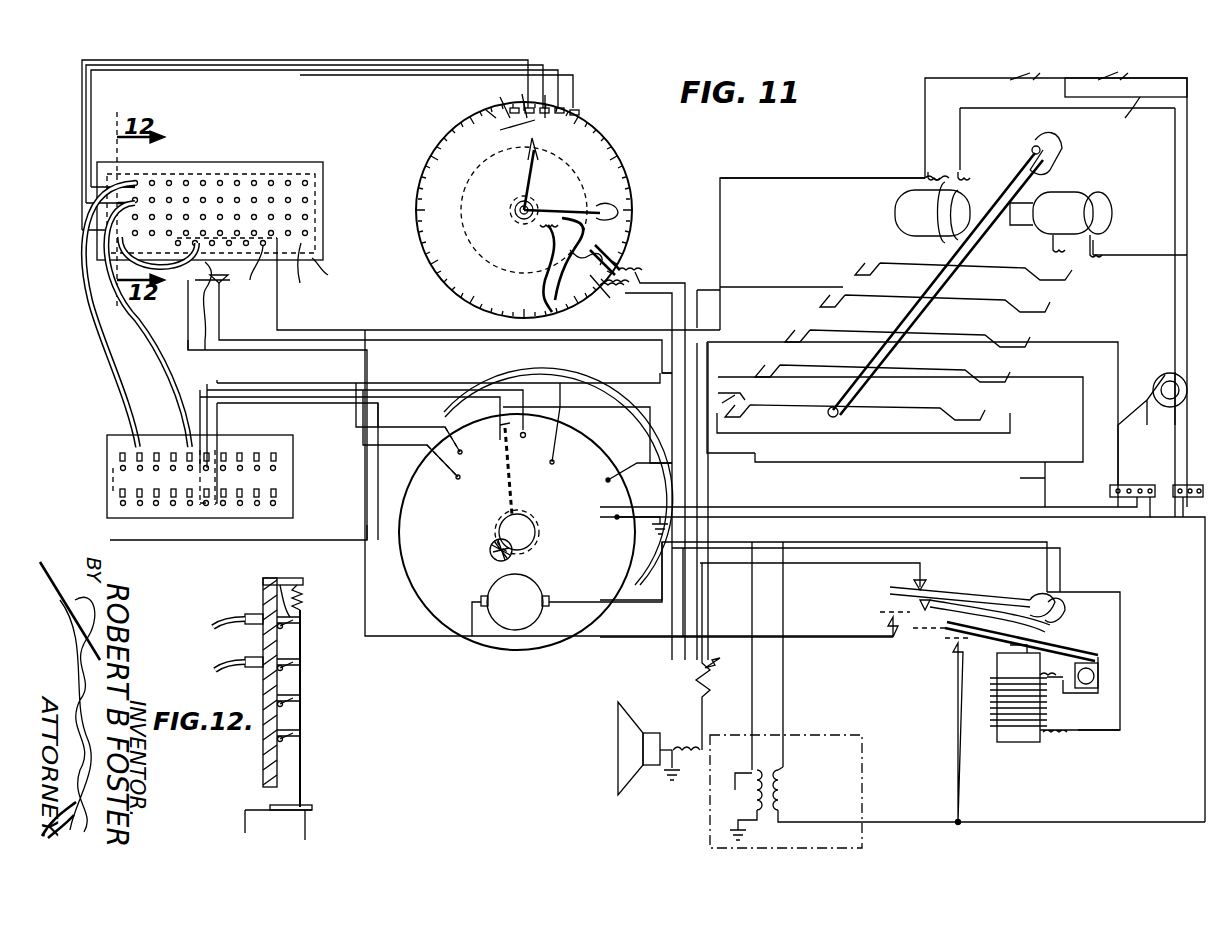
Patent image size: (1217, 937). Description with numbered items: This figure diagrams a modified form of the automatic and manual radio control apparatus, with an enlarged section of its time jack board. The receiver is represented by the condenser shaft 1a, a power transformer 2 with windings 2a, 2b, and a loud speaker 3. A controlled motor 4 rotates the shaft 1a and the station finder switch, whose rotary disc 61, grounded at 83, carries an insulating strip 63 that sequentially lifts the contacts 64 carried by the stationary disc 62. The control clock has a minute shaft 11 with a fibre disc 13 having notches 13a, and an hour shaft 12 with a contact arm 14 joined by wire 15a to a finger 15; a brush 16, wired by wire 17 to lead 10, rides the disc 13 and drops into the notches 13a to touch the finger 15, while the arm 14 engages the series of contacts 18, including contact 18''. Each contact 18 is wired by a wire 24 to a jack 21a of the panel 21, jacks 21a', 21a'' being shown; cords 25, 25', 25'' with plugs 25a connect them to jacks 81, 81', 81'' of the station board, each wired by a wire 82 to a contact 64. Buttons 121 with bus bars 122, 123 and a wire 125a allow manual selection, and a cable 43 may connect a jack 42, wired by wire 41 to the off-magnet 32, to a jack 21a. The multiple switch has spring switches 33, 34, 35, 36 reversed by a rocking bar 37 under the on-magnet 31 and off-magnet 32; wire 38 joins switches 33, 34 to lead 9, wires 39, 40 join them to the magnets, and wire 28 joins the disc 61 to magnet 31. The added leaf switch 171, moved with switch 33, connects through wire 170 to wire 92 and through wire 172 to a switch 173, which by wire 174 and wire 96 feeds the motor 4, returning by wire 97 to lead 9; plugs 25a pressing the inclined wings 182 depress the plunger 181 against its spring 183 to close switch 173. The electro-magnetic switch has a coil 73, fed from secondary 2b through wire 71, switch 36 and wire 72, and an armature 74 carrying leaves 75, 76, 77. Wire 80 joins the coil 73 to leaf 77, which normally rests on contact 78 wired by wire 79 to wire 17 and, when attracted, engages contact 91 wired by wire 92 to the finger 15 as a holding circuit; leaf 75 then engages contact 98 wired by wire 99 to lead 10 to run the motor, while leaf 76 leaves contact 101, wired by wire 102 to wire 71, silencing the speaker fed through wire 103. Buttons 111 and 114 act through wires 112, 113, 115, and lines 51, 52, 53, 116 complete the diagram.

In FIG. 11, the wire 24 is at (82, 128).
In FIG. 11, the board or panel 21 is at (320, 160).
In FIG. 12, the board or panel 21 is at (263, 684).
In FIG. 11, the jacks 21a is at (235, 200).
In FIG. 12, the jacks 21a is at (246, 598).
In FIG. 11, the jack 21a' is at (85, 187).
In FIG. 11, the jack 21a'' is at (77, 210).
In FIG. 11, the plunger 181 is at (330, 265).
In FIG. 12, the plunger 181 is at (300, 685).
In FIG. 11, the jacks 42 is at (193, 272).
In FIG. 11, the flexible cord or cable 43 is at (173, 267).
In FIG. 11, the cords 25 is at (115, 315).
In FIG. 12, the cords 25 is at (229, 633).
In FIG. 11, the plug cable 25' is at (64, 289).
In FIG. 11, the plug cable 25'' is at (147, 374).
In FIG. 12, the plug 25a is at (285, 578).
In FIG. 11, the switch 173 is at (200, 352).
In FIG. 12, the switch 173 is at (300, 805).
In FIG. 11, the minute shaft 11 is at (520, 212).
In FIG. 11, the hour shaft 12 is at (515, 207).
In FIG. 11, the fibre disc 13 is at (518, 195).
In FIG. 11, the notches 13a is at (480, 250).
In FIG. 11, the contact arm 14 is at (522, 125).
In FIG. 11, the contacts 18 is at (566, 100).
In FIG. 11, the contact segment 18'' is at (589, 88).
In FIG. 11, the finger 15 is at (592, 262).
In FIG. 11, the wire 15a is at (605, 240).
In FIG. 11, the resilient brush 16 is at (575, 290).
In FIG. 11, the wire 92 is at (655, 282).
In FIG. 11, the wire 17 is at (675, 304).
In FIG. 11, the wire 172 is at (602, 350).
In FIG. 12, the wire 172 is at (305, 830).
In FIG. 11, the bus bar 122 is at (395, 375).
In FIG. 11, the wire 125a is at (465, 376).
In FIG. 11, the bus bar 123 is at (637, 408).
In FIG. 11, the wire 82 is at (320, 392).
In FIG. 11, the buttons or switches 121 is at (275, 457).
In FIG. 11, the jack 81 is at (306, 467).
In FIG. 11, the jack 81' is at (126, 472).
In FIG. 11, the jack 81'' is at (95, 508).
In FIG. 11, the stationary disc 62 is at (598, 428).
In FIG. 11, the condenser shaft 1a is at (492, 535).
In FIG. 11, the insulating strip 63 is at (508, 494).
In FIG. 11, the rotary disc 61 is at (409, 455).
In FIG. 11, the electric contacts 64 is at (544, 441).
In FIG. 11, the ground 83 is at (632, 529).
In FIG. 11, the motor 4 is at (525, 582).
In FIG. 11, the wire 97 is at (576, 602).
In FIG. 11, the wire 96 is at (590, 636).
In FIG. 11, the wire 174 is at (355, 590).
In FIG. 12, the wire 174 is at (245, 826).
In FIG. 11, the wire 115 is at (925, 92).
In FIG. 11, the wire 113 is at (1140, 80).
In FIG. 11, the button 114 is at (1028, 80).
In FIG. 11, the button 111 is at (1112, 78).
In FIG. 11, the wire 112 is at (1193, 334).
In FIG. 11, the wire 40 is at (981, 106).
In FIG. 11, the wire 41 is at (860, 172).
In FIG. 11, the rocking bar 37 is at (1008, 180).
In FIG. 11, the off-magnet 32 is at (932, 207).
In FIG. 11, the on-magnet 31 is at (1061, 213).
In FIG. 11, the wire 39 is at (1077, 248).
In FIG. 11, the spring switch 33 is at (1015, 258).
In FIG. 11, the spring switch 34 is at (935, 286).
In FIG. 11, the spring switch 35 is at (907, 322).
In FIG. 11, the spring switch 36 is at (882, 358).
In FIG. 11, the leaf switch 171 is at (863, 419).
In FIG. 11, the wire 170 is at (736, 392).
In FIG. 11, the wire 38 is at (768, 296).
In FIG. 11, the conductor 52 is at (783, 342).
In FIG. 11, the wire 71 is at (763, 370).
In FIG. 11, the conductor 53 is at (1078, 345).
In FIG. 11, the wire 72 is at (1066, 378).
In FIG. 11, the wire 28 is at (1093, 276).
In FIG. 11, the conductor 116 is at (1020, 478).
In FIG. 11, the lead 9 is at (1110, 487).
In FIG. 11, the lead 10 is at (1182, 486).
In FIG. 11, the wire 79 is at (895, 536).
In FIG. 11, the wire 102 is at (800, 572).
In FIG. 11, the wire 103 is at (985, 567).
In FIG. 11, the contact 78 is at (888, 587).
In FIG. 11, the switch member 77 is at (888, 596).
In FIG. 11, the contact 101 is at (880, 612).
In FIG. 11, the contact 91 is at (885, 620).
In FIG. 11, the contact leaf 76 is at (915, 630).
In FIG. 11, the contact leaf 75 is at (945, 640).
In FIG. 11, the contact 98 is at (955, 652).
In FIG. 11, the armature 74 is at (1055, 645).
In FIG. 11, the wire 80 is at (1110, 630).
In FIG. 11, the coil 73 is at (1017, 742).
In FIG. 11, the wire 99 is at (958, 764).
In FIG. 11, the conductor 51 is at (1085, 822).
In FIG. 11, the loud speaker 3 is at (645, 748).
In FIG. 11, the power transformer 2 is at (752, 770).
In FIG. 11, the transformer winding 2a is at (785, 795).
In FIG. 11, the secondary 2b is at (752, 790).
In FIG. 12, the spring 183 is at (300, 598).
In FIG. 12, the wings or plates 182 is at (290, 640).